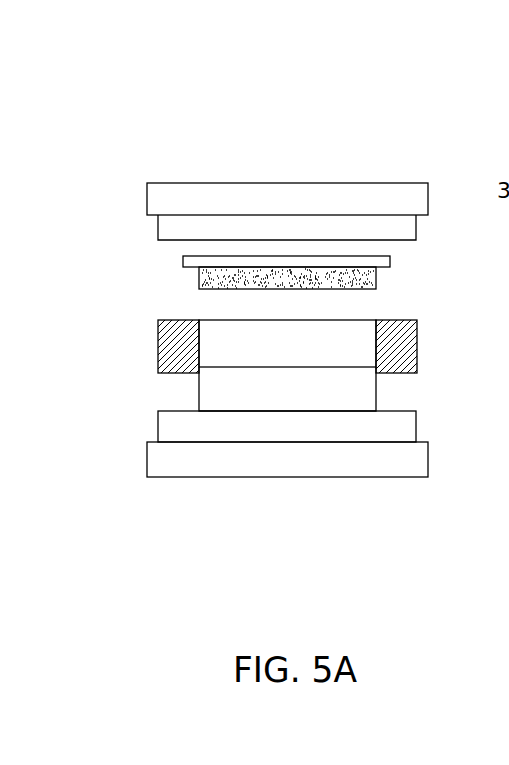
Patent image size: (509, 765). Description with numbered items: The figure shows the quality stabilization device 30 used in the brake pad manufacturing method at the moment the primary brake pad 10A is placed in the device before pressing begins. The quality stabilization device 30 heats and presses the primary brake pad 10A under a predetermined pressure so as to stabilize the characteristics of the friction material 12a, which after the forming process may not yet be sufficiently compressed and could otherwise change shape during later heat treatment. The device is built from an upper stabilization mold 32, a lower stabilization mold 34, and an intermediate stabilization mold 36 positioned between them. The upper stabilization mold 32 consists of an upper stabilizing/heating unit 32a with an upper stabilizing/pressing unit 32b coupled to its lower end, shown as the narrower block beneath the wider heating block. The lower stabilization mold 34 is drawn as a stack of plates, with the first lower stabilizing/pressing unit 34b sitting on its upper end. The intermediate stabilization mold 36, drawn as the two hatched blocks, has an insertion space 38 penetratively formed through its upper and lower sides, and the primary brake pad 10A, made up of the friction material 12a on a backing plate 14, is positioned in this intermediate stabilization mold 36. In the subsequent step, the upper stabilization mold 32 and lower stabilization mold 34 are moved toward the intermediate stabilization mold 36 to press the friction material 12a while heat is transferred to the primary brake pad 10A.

The quality stabilization device 30 is at (287, 155).
The upper stabilization mold 32 is at (287, 181).
The upper stabilizing/heating unit 32a is at (416, 197).
The upper stabilizing/pressing unit 32b is at (398, 227).
The primary brake pad 10A is at (292, 266).
The substrate plate 14 is at (385, 262).
The friction material 12a is at (376, 282).
The insertion space 38 is at (228, 332).
The intermediate stabilization mold 36 is at (420, 348).
The first lower stabilizing/pressing unit 34b is at (363, 390).
The lower stabilization mold 34 is at (408, 427).